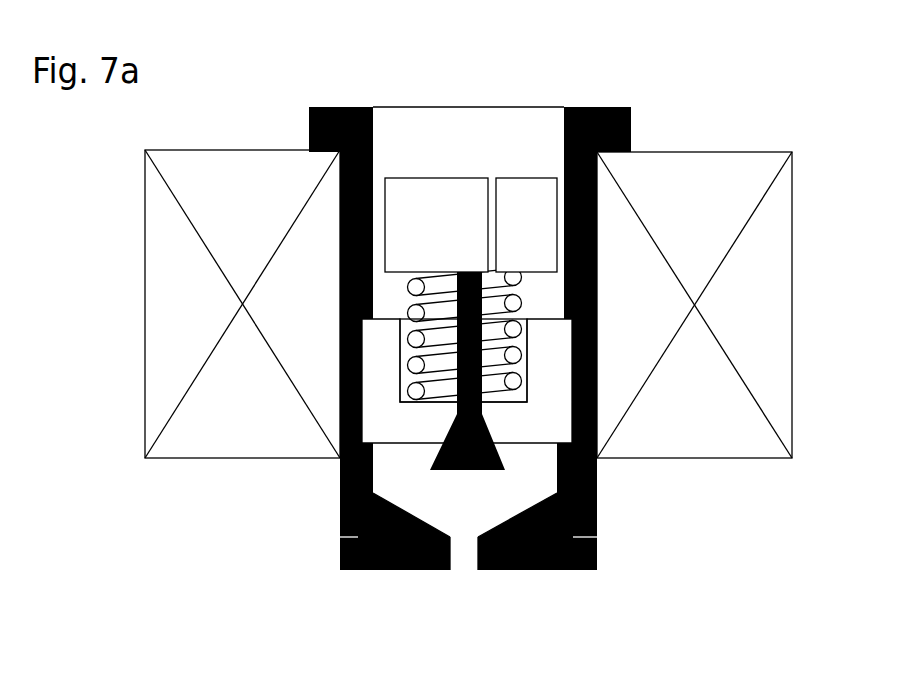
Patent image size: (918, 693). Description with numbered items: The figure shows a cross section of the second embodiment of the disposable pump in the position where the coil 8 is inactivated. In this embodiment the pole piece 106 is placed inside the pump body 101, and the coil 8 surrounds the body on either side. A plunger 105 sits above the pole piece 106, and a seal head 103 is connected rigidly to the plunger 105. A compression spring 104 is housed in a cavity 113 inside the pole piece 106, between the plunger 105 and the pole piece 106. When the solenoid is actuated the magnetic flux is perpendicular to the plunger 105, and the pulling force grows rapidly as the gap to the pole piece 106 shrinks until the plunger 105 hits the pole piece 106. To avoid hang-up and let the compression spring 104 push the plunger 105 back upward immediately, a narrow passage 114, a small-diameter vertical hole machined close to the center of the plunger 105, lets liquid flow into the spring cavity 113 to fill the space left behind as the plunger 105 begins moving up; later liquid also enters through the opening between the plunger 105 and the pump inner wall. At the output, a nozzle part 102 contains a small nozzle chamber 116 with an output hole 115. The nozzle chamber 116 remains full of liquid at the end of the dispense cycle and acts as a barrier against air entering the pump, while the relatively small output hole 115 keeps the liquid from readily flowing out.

The coil 8 is at (200, 466).
The pump body 101 is at (582, 96).
The nozzle part 102 is at (327, 555).
The seal head 103 is at (479, 483).
The compression spring 104 is at (533, 300).
The plunger 105 is at (514, 167).
The pole piece 106 is at (588, 400).
The compression spring cavity 113 is at (444, 385).
The narrow passage 114 is at (493, 237).
The output hole 115 is at (463, 558).
The nozzle chamber 116 is at (460, 498).